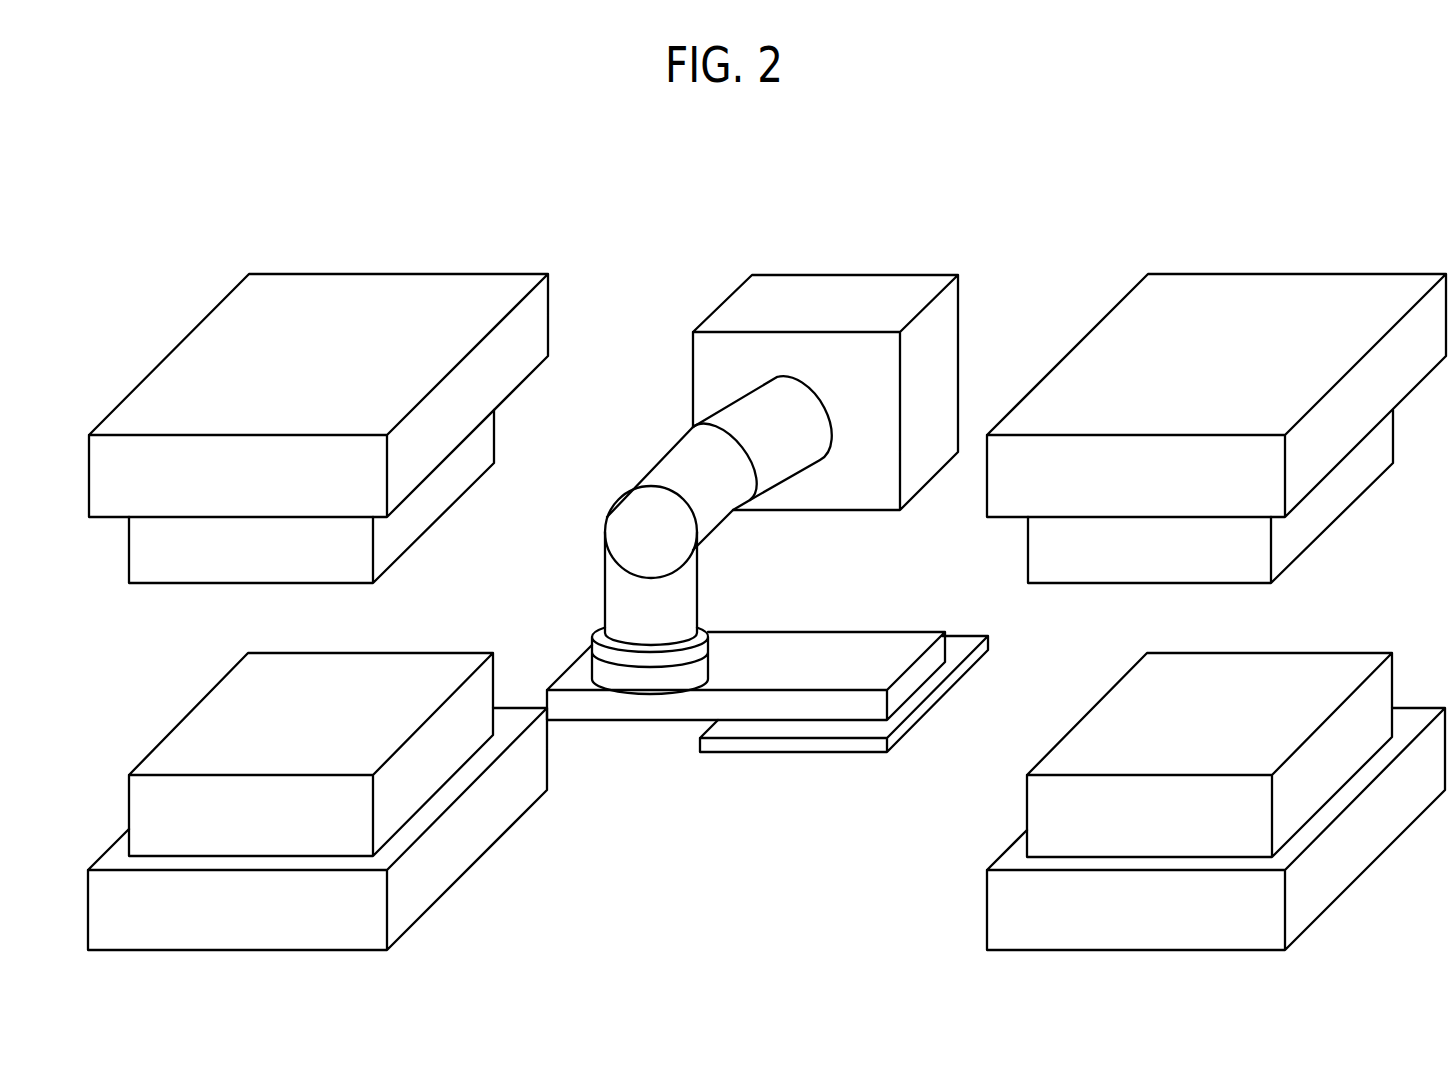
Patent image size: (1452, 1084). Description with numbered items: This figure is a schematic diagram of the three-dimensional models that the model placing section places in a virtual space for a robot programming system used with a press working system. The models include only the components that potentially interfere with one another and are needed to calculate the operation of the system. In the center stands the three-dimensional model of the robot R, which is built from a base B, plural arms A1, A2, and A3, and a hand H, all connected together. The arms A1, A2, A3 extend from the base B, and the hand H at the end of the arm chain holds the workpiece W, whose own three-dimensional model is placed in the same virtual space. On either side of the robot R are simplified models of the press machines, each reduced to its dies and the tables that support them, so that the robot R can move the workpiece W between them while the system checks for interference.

The robot R is at (833, 248).
The base B is at (753, 313).
The arm A1 is at (735, 413).
The arm A2 is at (667, 467).
The arm A3 is at (620, 605).
The work-holding hand H is at (812, 647).
The workpiece W is at (797, 745).